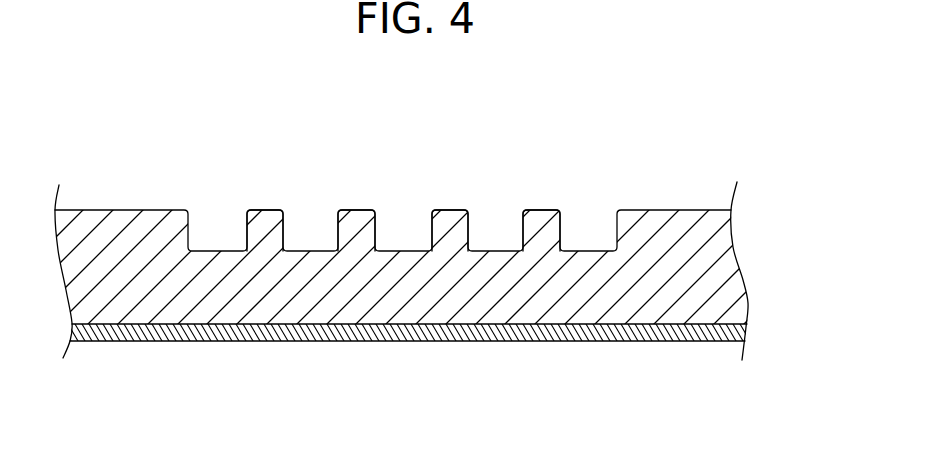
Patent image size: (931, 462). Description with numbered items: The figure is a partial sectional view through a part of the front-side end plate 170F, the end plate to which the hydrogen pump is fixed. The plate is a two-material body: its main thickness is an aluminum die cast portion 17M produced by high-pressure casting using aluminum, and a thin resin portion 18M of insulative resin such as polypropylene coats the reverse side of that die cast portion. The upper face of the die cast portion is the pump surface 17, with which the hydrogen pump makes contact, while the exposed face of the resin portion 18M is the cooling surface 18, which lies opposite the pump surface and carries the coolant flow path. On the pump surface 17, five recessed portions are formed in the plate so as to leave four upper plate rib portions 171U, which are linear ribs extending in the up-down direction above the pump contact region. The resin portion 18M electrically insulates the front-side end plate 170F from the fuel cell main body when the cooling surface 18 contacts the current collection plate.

The front-side end plate 170F is at (431, 253).
The pump surface 17 is at (689, 210).
The aluminum die cast portion 17M is at (718, 250).
The upper plate rib portions 171U is at (542, 208).
The cooling surface 18 is at (671, 341).
The resin portion 18M is at (725, 332).